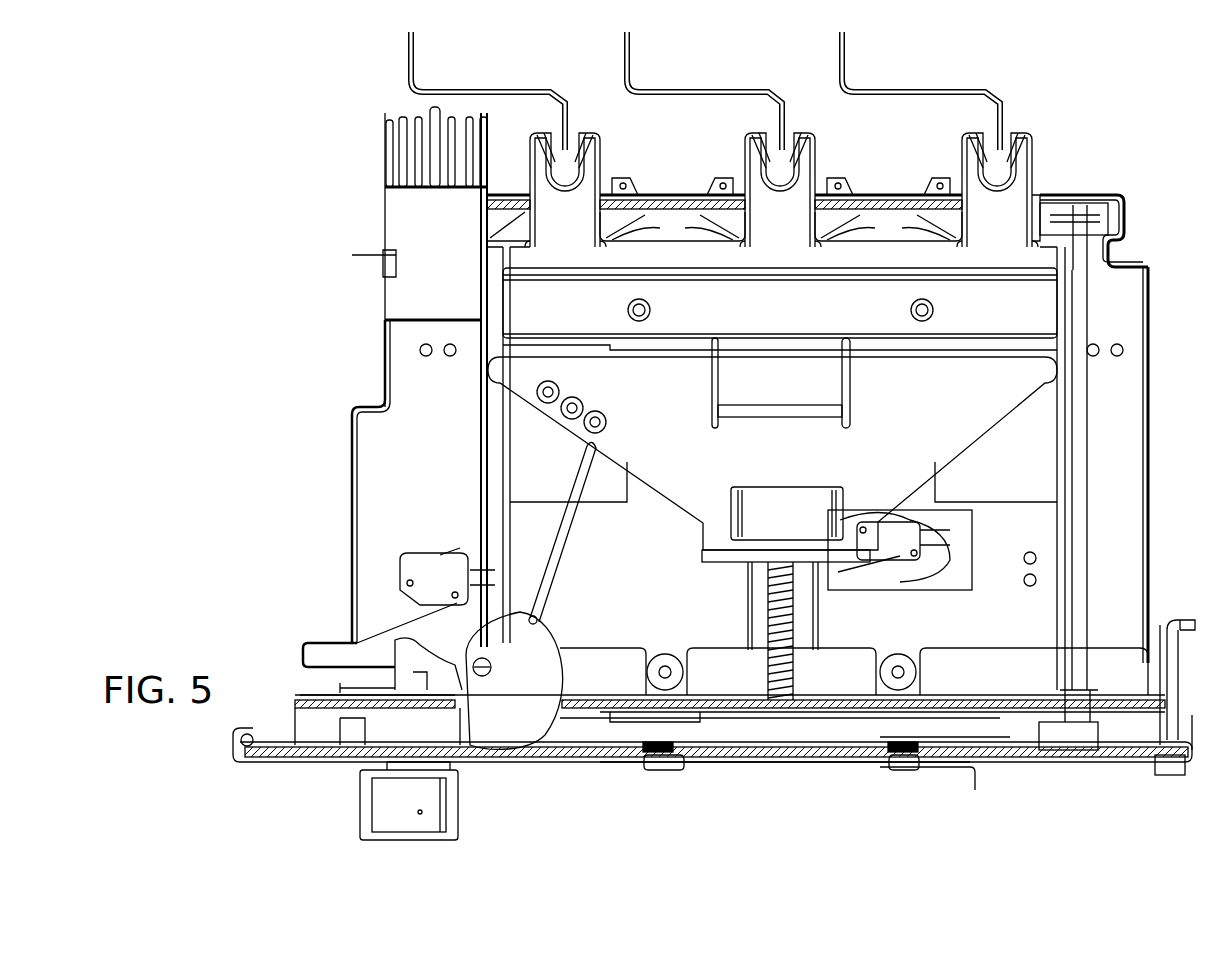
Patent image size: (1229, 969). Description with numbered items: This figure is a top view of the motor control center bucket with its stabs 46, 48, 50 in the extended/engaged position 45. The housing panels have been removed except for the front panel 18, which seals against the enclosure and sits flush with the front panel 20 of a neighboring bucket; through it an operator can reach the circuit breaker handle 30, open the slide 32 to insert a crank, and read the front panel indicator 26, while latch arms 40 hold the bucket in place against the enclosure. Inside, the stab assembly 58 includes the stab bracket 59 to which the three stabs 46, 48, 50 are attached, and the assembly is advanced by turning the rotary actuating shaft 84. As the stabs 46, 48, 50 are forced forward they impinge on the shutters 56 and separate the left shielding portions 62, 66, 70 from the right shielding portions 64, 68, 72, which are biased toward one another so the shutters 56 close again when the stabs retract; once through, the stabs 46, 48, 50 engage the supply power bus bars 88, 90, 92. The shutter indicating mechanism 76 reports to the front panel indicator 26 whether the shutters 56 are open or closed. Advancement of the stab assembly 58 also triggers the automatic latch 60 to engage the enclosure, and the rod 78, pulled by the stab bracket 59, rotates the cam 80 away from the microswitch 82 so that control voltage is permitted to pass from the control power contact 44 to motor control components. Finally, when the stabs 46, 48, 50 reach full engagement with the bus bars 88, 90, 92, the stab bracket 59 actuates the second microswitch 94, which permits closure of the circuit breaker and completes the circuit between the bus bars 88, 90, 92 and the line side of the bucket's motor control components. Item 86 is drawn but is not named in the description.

The front panel 18 is at (1022, 760).
The front panel of bucket 14 20 is at (1172, 766).
The front panel indicator 26 is at (1070, 740).
The circuit breaker handle 30 is at (412, 826).
The slide 32 is at (838, 768).
The latch arms 40 is at (1175, 620).
The control power contact 44 is at (376, 149).
The extended/engaged position 45 is at (803, 74).
The stab 46 is at (553, 226).
The stab 48 is at (768, 226).
The stab 50 is at (985, 226).
The shutters 56 is at (612, 216).
The stab assembly 58 is at (668, 350).
The stab bracket 59 is at (905, 414).
The automatic latch 60 is at (775, 524).
The left shielding portion 62 is at (514, 214).
The right shielding portion 64 is at (640, 197).
The left shielding portion 66 is at (740, 207).
The right shielding portion 68 is at (848, 200).
The left shielding portion 70 is at (962, 205).
The right shielding portion 72 is at (1058, 200).
The shutter indicating mechanism 76 is at (1084, 558).
The rod 78 is at (558, 566).
The cam 80 is at (503, 702).
The microswitch 82 is at (437, 575).
The actuating shaft 84 is at (766, 608).
The bracket 86 is at (1124, 222).
The supply power bus 88 is at (470, 90).
The supply power bus 90 is at (688, 90).
The supply power bus 92 is at (925, 90).
The second microswitch 94 is at (908, 560).